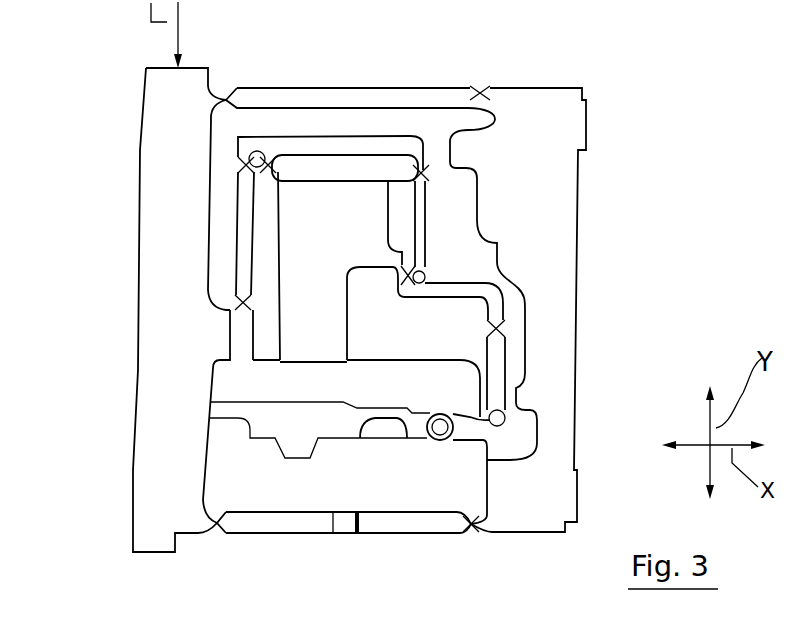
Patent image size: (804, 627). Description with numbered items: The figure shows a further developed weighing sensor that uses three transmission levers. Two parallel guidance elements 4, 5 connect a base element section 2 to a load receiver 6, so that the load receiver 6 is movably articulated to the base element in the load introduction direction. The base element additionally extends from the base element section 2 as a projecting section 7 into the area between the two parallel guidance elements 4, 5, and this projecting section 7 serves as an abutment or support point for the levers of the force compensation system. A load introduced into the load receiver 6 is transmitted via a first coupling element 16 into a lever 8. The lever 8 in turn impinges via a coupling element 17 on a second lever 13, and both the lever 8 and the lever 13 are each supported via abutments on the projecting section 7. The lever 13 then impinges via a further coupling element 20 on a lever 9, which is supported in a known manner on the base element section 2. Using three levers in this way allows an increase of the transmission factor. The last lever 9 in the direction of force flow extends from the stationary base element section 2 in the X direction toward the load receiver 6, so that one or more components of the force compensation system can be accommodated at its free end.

The base element section 2 is at (553, 148).
The parallel guidance element 4 is at (415, 98).
The parallel guidance element 5 is at (270, 527).
The load receiver 6 is at (187, 217).
The projecting section 7 is at (330, 255).
The lever 8 is at (305, 147).
The lever 9 is at (350, 424).
The second lever 13 is at (450, 297).
The first coupling element 16 is at (243, 241).
The coupling element 17 is at (420, 223).
The coupling element 20 is at (494, 367).